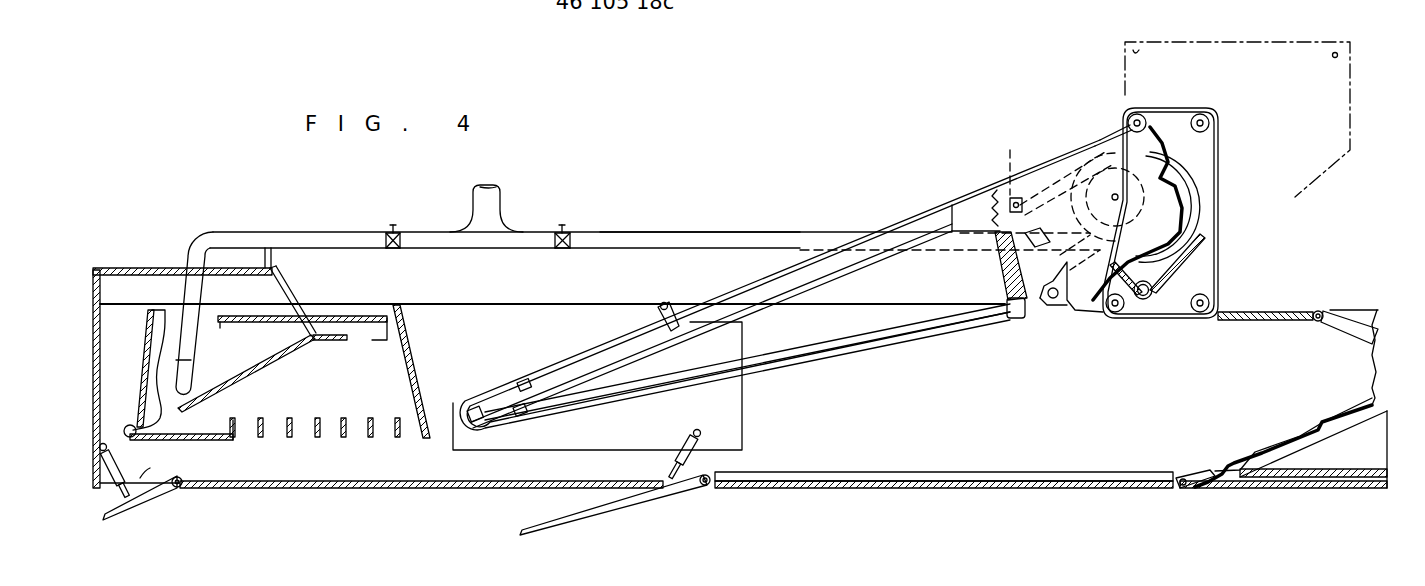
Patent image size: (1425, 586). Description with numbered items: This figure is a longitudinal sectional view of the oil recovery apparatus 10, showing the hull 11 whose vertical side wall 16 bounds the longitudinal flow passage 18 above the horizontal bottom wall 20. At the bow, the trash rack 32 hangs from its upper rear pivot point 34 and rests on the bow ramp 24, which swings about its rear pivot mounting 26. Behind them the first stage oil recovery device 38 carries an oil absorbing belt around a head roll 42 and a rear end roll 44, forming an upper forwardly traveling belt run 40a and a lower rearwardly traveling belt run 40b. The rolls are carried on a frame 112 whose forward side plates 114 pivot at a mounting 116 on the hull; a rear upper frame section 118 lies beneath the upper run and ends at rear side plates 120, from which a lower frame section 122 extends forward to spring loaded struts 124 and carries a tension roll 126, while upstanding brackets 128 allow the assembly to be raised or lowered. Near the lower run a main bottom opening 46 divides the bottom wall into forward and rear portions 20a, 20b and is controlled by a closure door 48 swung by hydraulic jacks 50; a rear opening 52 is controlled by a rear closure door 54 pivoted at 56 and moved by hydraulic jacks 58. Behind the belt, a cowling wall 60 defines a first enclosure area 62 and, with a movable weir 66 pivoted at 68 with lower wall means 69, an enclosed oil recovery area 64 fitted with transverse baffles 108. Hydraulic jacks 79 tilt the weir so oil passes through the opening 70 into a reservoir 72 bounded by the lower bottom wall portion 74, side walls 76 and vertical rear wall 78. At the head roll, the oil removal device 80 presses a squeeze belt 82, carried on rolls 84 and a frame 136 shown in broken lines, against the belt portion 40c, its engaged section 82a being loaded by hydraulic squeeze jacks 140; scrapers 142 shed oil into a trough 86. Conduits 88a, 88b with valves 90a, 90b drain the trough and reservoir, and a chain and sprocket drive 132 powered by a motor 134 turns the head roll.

The apparatus 10 is at (650, 194).
The hull 11 is at (598, 296).
The side wall 16 is at (299, 402).
The longitudinal flow passage 18 is at (915, 480).
The bottom wall 20 is at (794, 488).
The forward bottom wall portion 20a is at (1012, 488).
The rear bottom wall portion 20b is at (392, 488).
The bow ramp 24 is at (1215, 472).
The rear pivot mounting 26 is at (1180, 488).
The trash rack 32 is at (1352, 330).
The upper rear pivot point 34 is at (1317, 310).
The first stage oil recovery device 38 is at (768, 262).
The upper belt run 40a is at (872, 228).
The lower belt run 40b is at (920, 340).
The belt portion around head roll 40c is at (1185, 222).
The head roll 42 is at (1110, 155).
The rear end roll 44 is at (470, 408).
The main bottom opening 46 is at (512, 490).
The closure door 48 is at (658, 490).
The hydraulic jacks 50 is at (705, 440).
The rear opening 52 is at (138, 480).
The rear closure door 54 is at (158, 492).
The rear door pivot 56 is at (182, 480).
The hydraulic jacks 58 is at (106, 445).
The cowling wall 60 is at (408, 340).
The first enclosure area 62 is at (450, 362).
The enclosed oil recovery area 64 is at (362, 332).
The movable weir 66 is at (292, 350).
The weir pivot 68 is at (150, 372).
The lower wall means 69 is at (232, 381).
The opening 70 is at (350, 325).
The reservoir 72 is at (192, 376).
The lower bottom wall portion 74 is at (180, 415).
The side walls 76 is at (215, 349).
The vertical rear wall 78 is at (175, 308).
The hydraulic jacks 79 is at (298, 300).
The oil removal device 80 is at (1176, 103).
The squeeze belt 82 is at (1220, 210).
The squeeze belt section 82a is at (1185, 190).
The rolls 84 is at (1210, 118).
The trough 86 is at (1160, 312).
The conduit 88a is at (690, 236).
The conduit 88b is at (358, 236).
The valve 90a is at (572, 238).
The valve 90b is at (402, 238).
The transverse baffles 108 is at (290, 432).
The frame 112 is at (948, 225).
The side plates 114 is at (1040, 180).
The pivot mounting 116 is at (1052, 305).
The rear upper frame section 118 is at (850, 255).
The rear side plates 120 is at (510, 395).
The lower frame section 122 is at (778, 357).
The spring loaded struts 124 is at (1003, 285).
The tension roll 126 is at (1012, 320).
The upstanding brackets 128 is at (670, 300).
The chain and sprocket drive 132 is at (1180, 168).
The motor 134 is at (1013, 196).
The frame 136 is at (1243, 42).
The hydraulic squeeze jacks 140 is at (1030, 240).
The scrapers 142 is at (1160, 262).